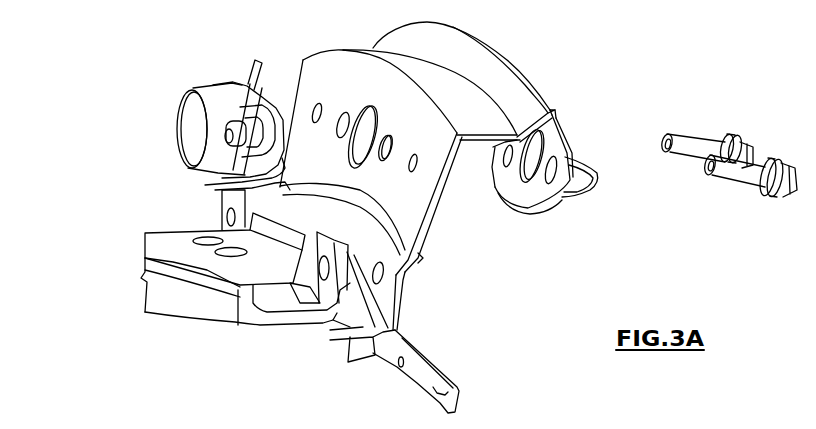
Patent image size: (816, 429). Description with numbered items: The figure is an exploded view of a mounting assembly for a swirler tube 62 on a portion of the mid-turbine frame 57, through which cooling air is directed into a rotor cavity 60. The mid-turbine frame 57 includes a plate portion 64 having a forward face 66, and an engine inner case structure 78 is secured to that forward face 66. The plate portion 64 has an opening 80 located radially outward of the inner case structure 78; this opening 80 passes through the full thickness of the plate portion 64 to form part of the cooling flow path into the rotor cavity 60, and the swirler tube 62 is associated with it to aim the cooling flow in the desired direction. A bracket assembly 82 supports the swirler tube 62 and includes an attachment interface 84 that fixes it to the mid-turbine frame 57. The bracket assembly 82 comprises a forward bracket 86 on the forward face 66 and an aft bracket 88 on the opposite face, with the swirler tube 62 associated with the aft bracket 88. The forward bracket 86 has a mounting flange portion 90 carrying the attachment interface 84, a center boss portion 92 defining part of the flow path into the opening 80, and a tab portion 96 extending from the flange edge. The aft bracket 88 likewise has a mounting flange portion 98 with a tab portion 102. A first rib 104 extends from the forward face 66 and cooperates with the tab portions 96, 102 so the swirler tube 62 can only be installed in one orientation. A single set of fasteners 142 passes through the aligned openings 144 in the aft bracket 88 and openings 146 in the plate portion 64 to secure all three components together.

The mid-turbine frame 57 is at (480, 37).
The rotor cavity 60 is at (538, 337).
The swirler tube 62 is at (588, 149).
The plate portion 64 is at (410, 288).
The forward face 66 is at (320, 88).
The engine inner case structure 78 is at (160, 240).
The opening 80 is at (362, 106).
The bracket assembly 82 is at (121, 86).
The attachment interface 84 is at (277, 88).
The forward bracket 86 is at (185, 168).
The aft bracket 88 is at (492, 177).
The mounting flange portion 90 is at (205, 186).
The center boss portion 92 is at (185, 90).
The tab portion 96 is at (249, 67).
The mounting flange portion 98 is at (563, 134).
The tab portion 102 is at (553, 108).
The first rib 104 is at (420, 264).
The fastener 142 is at (685, 153).
The opening 144 is at (496, 190).
The opening 146 is at (344, 112).